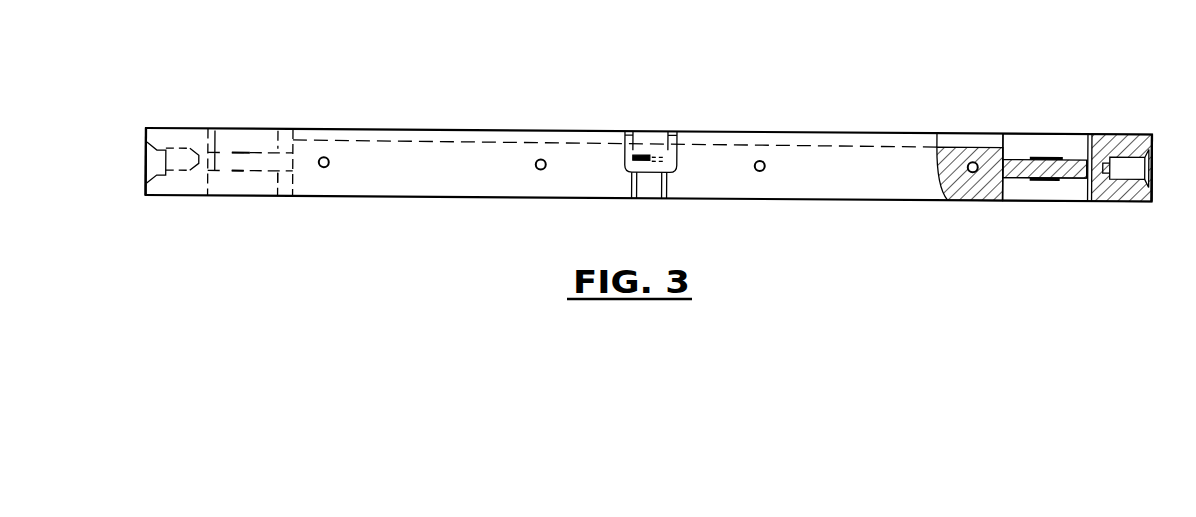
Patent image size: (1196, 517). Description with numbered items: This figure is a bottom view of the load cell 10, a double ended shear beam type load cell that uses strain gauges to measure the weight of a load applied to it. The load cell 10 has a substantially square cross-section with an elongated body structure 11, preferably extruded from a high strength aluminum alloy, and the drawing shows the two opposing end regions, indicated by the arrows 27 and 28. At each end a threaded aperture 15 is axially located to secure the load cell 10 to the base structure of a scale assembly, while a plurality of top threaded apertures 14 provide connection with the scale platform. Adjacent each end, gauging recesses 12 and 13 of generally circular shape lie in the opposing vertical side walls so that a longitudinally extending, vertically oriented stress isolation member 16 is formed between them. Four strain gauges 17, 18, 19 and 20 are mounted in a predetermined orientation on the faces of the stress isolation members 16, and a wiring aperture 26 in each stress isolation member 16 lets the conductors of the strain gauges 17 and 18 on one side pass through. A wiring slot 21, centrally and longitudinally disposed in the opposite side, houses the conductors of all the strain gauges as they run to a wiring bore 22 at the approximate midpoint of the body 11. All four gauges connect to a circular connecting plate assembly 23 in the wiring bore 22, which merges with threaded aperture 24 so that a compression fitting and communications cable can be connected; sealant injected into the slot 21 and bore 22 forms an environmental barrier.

The load cell 10 is at (817, 69).
The elongated body structure 11 is at (440, 187).
The gauging recess 12 is at (277, 142).
The gauging recess 13 is at (258, 190).
The top threaded aperture 14 is at (328, 157).
The threaded aperture 15 is at (163, 177).
The stress isolation member 16 is at (280, 173).
The strain gauge 17 is at (242, 173).
The strain gauge 18 is at (1033, 187).
The strain gauge 19 is at (248, 152).
The strain gauge 20 is at (1043, 160).
The wiring slot 21 is at (498, 138).
The wiring bore 22 is at (657, 142).
The connecting plate assembly 23 is at (640, 152).
The threaded aperture 24 is at (650, 200).
The wiring aperture 26 is at (215, 128).
The first end 27 is at (87, 221).
The second end 28 is at (1153, 244).